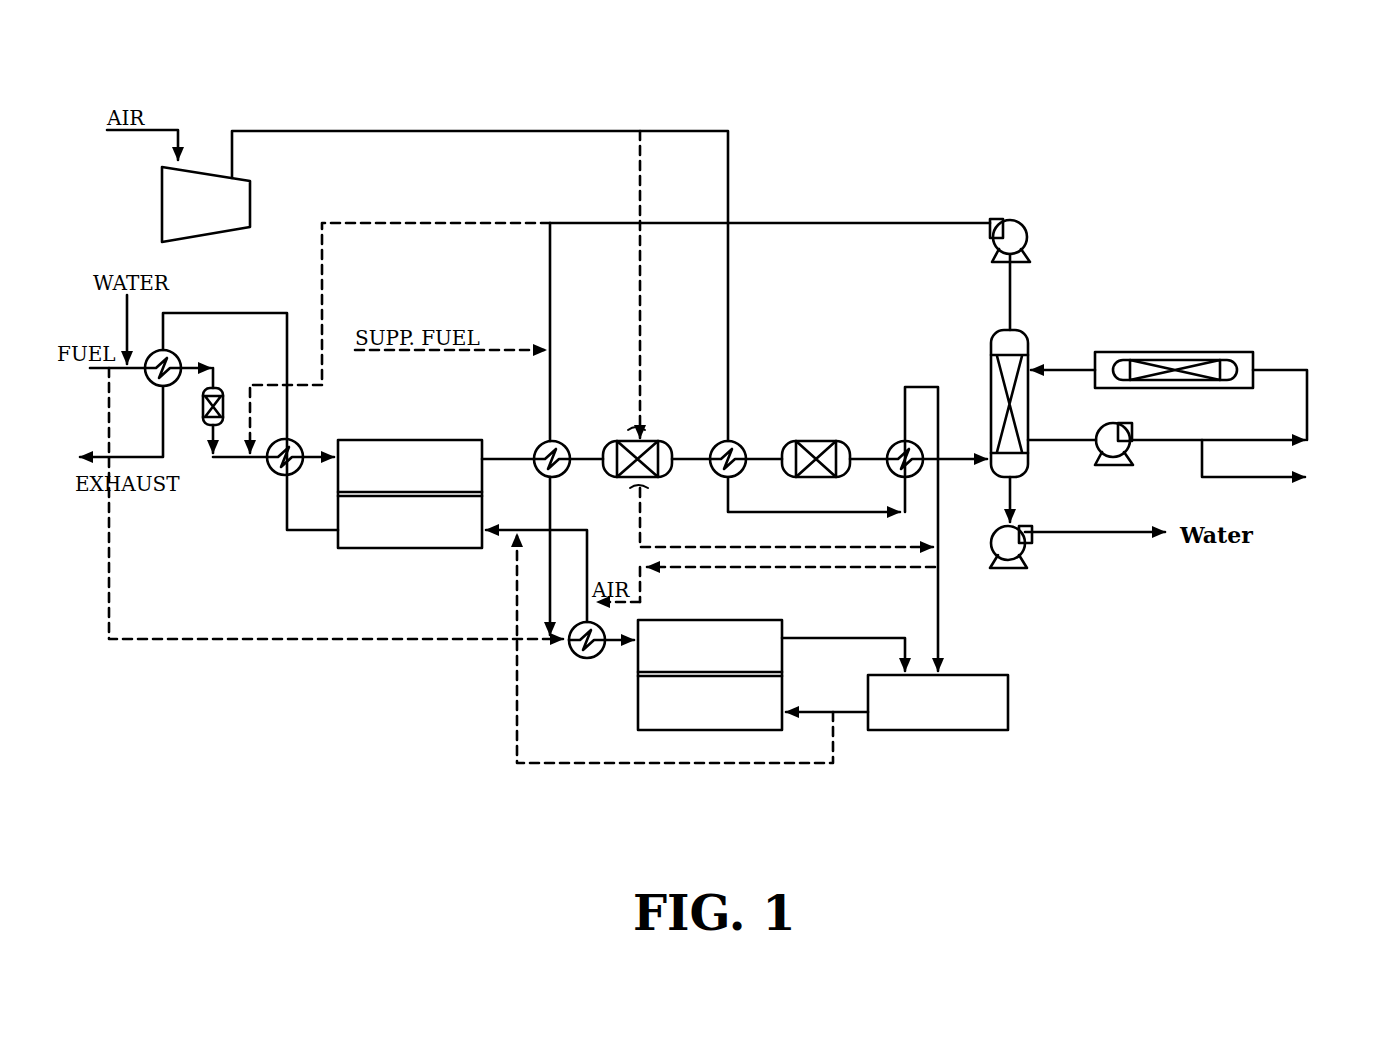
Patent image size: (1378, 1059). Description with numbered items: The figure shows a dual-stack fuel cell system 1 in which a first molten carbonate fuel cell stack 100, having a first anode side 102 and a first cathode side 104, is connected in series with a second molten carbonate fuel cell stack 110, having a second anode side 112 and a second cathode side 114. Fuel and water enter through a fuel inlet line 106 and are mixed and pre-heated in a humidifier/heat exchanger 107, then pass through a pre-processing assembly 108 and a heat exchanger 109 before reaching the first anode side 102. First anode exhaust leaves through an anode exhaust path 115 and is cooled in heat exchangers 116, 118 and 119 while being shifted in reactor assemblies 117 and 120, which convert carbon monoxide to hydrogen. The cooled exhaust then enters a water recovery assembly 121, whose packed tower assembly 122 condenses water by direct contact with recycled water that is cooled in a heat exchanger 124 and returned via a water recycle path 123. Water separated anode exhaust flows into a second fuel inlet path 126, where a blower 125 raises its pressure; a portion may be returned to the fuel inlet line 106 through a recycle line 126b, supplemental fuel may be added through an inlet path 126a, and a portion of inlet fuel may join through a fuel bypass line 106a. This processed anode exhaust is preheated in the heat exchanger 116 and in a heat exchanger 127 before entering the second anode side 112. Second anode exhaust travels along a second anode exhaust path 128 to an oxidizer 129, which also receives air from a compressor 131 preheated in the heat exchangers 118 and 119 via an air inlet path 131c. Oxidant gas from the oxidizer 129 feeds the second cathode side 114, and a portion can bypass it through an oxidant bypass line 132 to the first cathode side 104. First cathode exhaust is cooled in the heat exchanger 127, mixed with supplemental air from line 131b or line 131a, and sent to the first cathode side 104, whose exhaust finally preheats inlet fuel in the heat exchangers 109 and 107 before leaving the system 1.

The dual-stack fuel cell system 1 is at (1131, 156).
The first molten carbonate fuel cell stack 100 is at (415, 490).
The first anode side 102 is at (363, 440).
The first cathode side 104 is at (365, 549).
The fuel inlet line 106 is at (192, 362).
The fuel bypass line 106a is at (272, 641).
The humidifier/heat exchanger 107 is at (157, 380).
The pre-processing assembly 108 is at (226, 400).
The heat exchanger 109 is at (276, 478).
The second molten carbonate fuel cell stack 110 is at (740, 664).
The second anode side 112 is at (784, 652).
The second cathode side 114 is at (705, 730).
The anode exhaust path 115 is at (496, 448).
The heat exchanger 116 is at (556, 441).
The reactor assembly 117 is at (655, 437).
The heat exchanger 118 is at (732, 441).
The heat exchanger 119 is at (893, 442).
The reactor assembly 120 is at (803, 440).
The water recovery assembly 121 is at (1234, 357).
The packed tower assembly 122 is at (1017, 338).
The water recycle path 123 is at (1300, 368).
The heat exchanger 124 is at (1200, 352).
The blower 125 is at (1020, 226).
The second fuel inlet path 126 is at (795, 222).
The inlet path 126a is at (505, 348).
The recycle line 126b is at (423, 221).
The heat exchanger 127 is at (575, 660).
The second anode exhaust path 128 is at (845, 638).
The oxidizer 129 is at (1010, 685).
The compressor 131 is at (178, 202).
The line 131a is at (645, 320).
The line 131b is at (758, 568).
The air inlet path 131c is at (505, 130).
The oxidant bypass line 132 is at (835, 765).